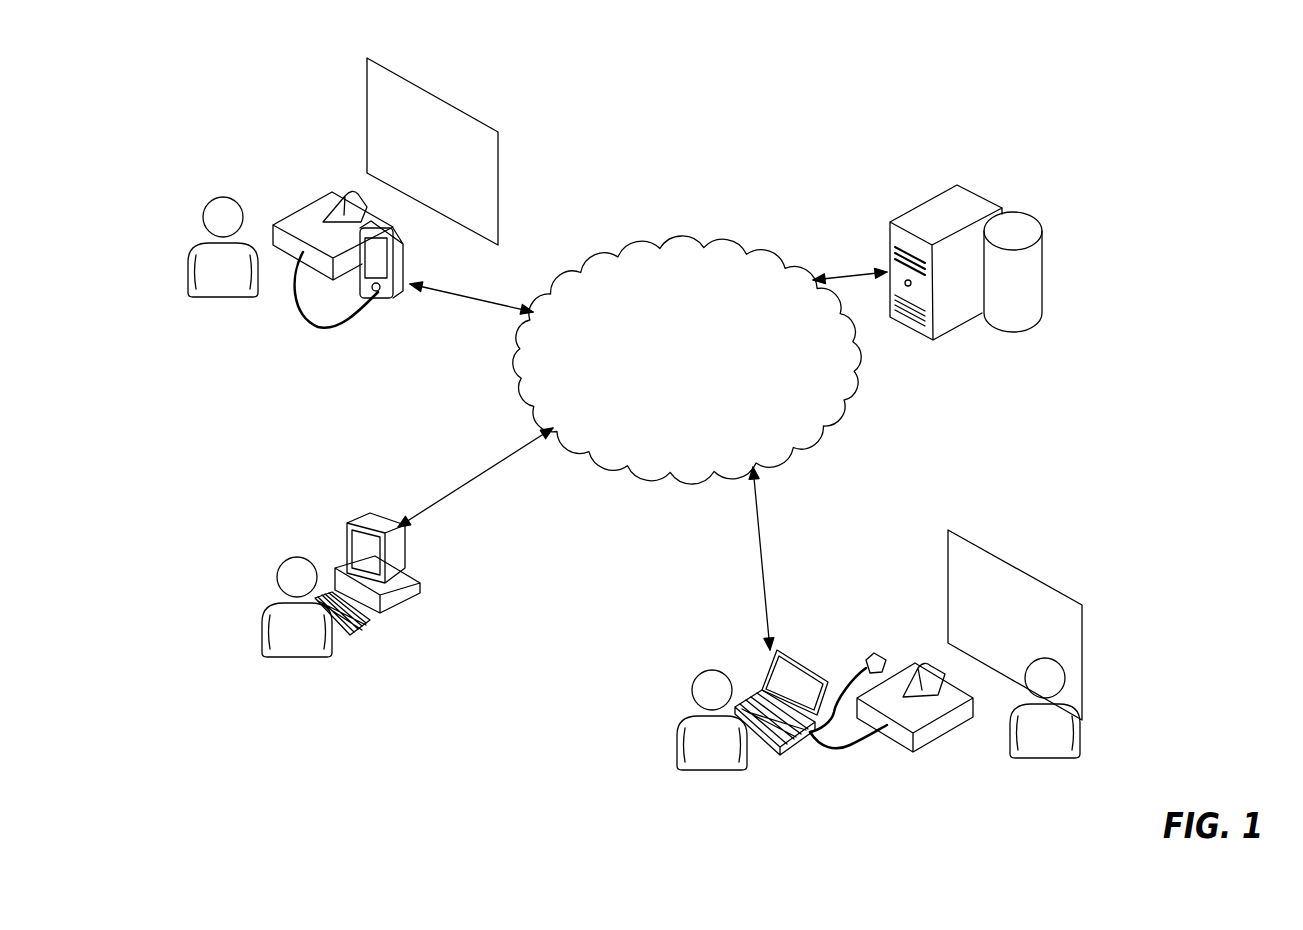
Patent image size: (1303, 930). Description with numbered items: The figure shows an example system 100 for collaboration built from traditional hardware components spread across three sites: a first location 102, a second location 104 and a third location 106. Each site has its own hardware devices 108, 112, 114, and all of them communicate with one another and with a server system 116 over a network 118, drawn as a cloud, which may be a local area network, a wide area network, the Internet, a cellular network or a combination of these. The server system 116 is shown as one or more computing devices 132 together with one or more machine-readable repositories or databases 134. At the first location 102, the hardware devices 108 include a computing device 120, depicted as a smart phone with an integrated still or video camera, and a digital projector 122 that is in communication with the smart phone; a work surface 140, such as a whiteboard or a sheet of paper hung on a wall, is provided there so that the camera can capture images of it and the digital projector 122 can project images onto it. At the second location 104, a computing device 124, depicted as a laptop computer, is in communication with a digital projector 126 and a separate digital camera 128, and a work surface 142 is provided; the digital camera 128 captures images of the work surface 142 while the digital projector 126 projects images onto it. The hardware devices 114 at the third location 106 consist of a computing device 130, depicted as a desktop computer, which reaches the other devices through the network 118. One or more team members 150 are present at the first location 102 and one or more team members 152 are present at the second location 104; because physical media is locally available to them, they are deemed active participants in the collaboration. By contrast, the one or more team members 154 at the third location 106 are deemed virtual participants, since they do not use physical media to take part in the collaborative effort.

The system 100 is at (768, 125).
The first location 102 is at (184, 99).
The second location 104 is at (874, 550).
The third location 106 is at (286, 512).
The hardware devices 108 is at (272, 327).
The hardware devices 112 is at (405, 625).
The hardware devices 114 is at (826, 777).
The server system 116 is at (992, 363).
The network 118 is at (667, 246).
The computing device 120 is at (378, 298).
The digital projector 122 is at (307, 203).
The computing device 124 is at (764, 672).
The digital projector 126 is at (920, 752).
The digital camera 128 is at (862, 662).
The computing device 130 is at (412, 566).
The computing devices 132 is at (981, 194).
The databases 134 is at (1045, 226).
The work surface 140 is at (500, 188).
The work surface 142 is at (1082, 653).
The team members 150 is at (190, 238).
The team members 152 is at (696, 768).
The team members 154 is at (284, 654).